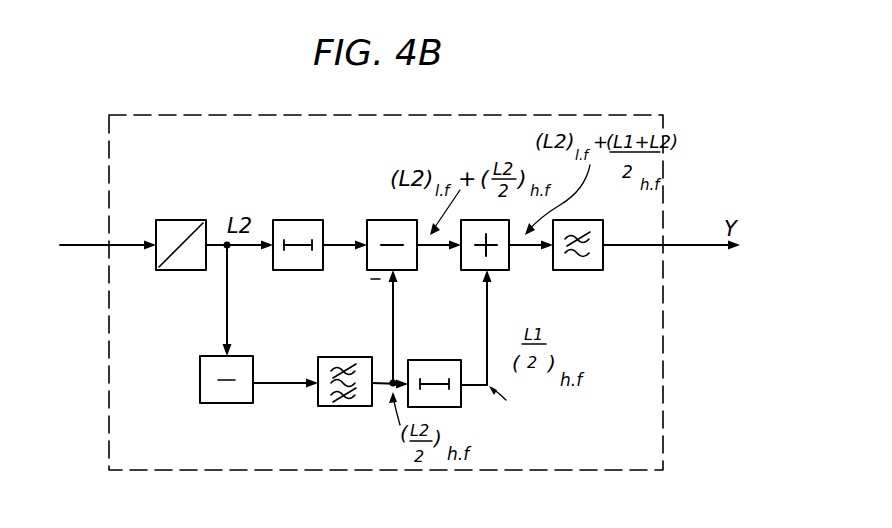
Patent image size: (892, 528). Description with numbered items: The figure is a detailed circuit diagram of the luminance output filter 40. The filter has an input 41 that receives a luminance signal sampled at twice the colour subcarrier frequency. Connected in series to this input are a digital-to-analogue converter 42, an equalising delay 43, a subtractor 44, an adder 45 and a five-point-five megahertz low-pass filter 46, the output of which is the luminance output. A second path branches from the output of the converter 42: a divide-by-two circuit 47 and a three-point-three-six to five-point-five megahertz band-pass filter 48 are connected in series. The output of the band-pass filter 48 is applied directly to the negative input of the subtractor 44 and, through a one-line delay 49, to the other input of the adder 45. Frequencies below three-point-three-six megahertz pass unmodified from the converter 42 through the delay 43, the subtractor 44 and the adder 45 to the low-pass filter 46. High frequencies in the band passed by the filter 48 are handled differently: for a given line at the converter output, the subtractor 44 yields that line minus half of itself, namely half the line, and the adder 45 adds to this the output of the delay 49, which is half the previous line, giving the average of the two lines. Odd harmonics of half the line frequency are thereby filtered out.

The luminance output filter 40 is at (386, 275).
The input 41 is at (95, 247).
The digital-to-analogue converter 42 is at (186, 270).
The equalising delay 43 is at (299, 270).
The subtractor 44 is at (417, 258).
The adder 45 is at (503, 270).
The 5.5 MHz low-pass filter 46 is at (603, 229).
The divide-by-two circuit 47 is at (200, 379).
The 3.36 to 5.5 MHz band-pass filter 48 is at (318, 369).
The one-line delay 49 is at (461, 395).